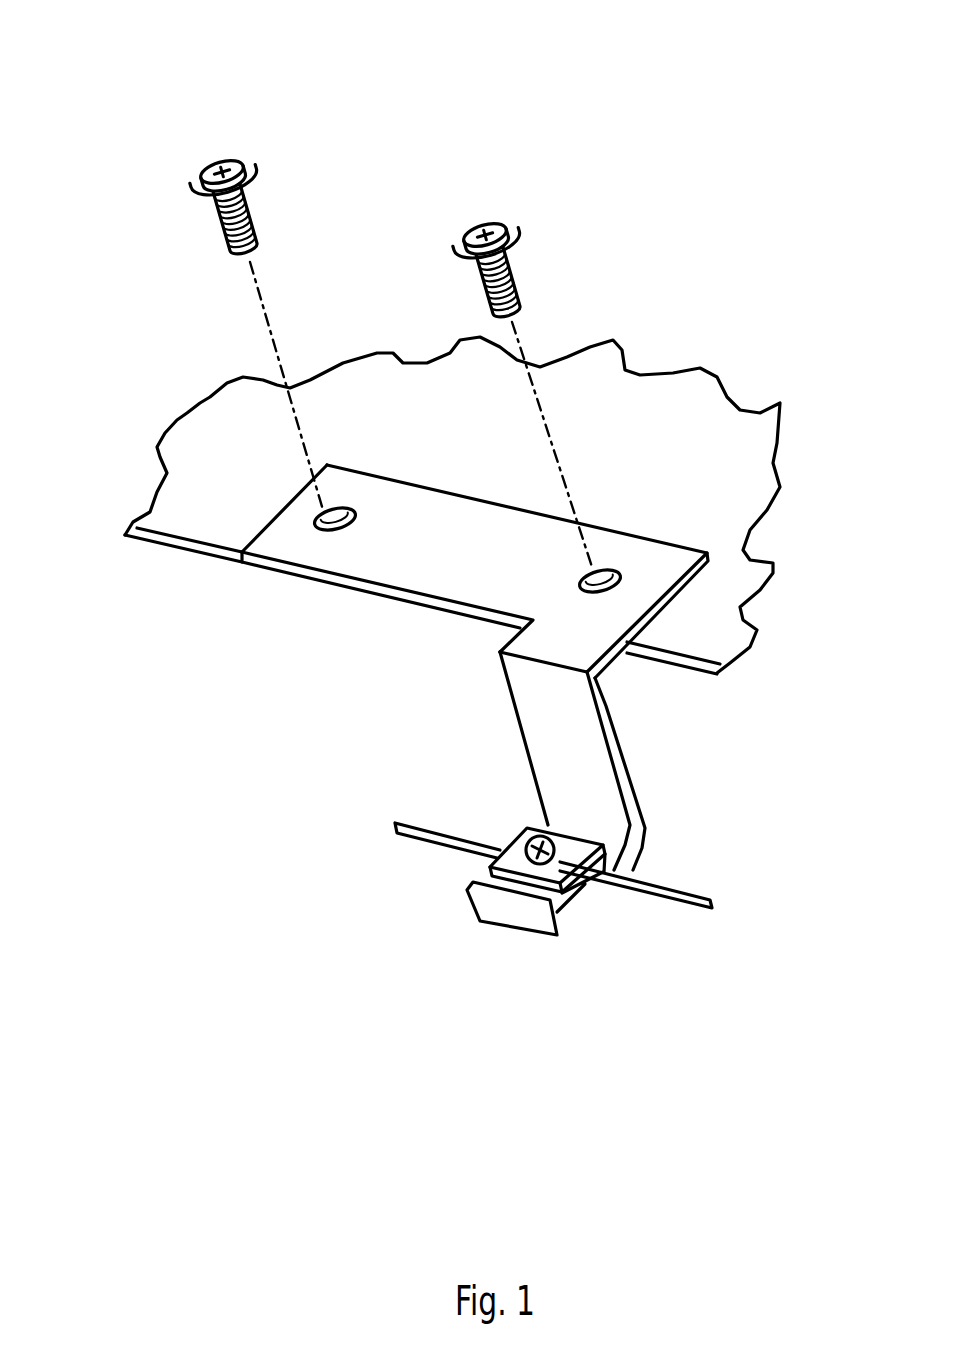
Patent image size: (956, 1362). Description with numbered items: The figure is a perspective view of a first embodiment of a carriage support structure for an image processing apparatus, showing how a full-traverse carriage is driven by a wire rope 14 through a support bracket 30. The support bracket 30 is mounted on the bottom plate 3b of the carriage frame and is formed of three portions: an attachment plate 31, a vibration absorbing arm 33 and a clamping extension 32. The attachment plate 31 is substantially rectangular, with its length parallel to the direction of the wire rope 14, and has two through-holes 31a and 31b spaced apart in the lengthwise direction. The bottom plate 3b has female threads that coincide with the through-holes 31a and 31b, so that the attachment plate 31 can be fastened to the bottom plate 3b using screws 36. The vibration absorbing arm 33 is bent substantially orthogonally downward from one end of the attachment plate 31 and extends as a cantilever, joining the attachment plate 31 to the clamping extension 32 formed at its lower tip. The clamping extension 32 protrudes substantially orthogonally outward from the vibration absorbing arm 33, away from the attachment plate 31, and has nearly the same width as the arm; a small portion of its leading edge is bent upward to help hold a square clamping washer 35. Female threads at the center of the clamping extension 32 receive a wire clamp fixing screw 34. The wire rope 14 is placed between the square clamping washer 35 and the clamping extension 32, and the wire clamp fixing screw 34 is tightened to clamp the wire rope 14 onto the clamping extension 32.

The bottom plate 3b is at (203, 510).
The support bracket 30 is at (515, 776).
The attachment plate 31 is at (297, 550).
The through-hole 31a is at (617, 573).
The through-hole 31b is at (318, 512).
The clamping extension 32 is at (572, 898).
The vibration absorbing arm 33 is at (588, 768).
The wire clamp fixing screw 34 is at (527, 857).
The square clamping washer 35 is at (535, 870).
The screws 36 is at (240, 157).
The wire rope 14 is at (658, 890).